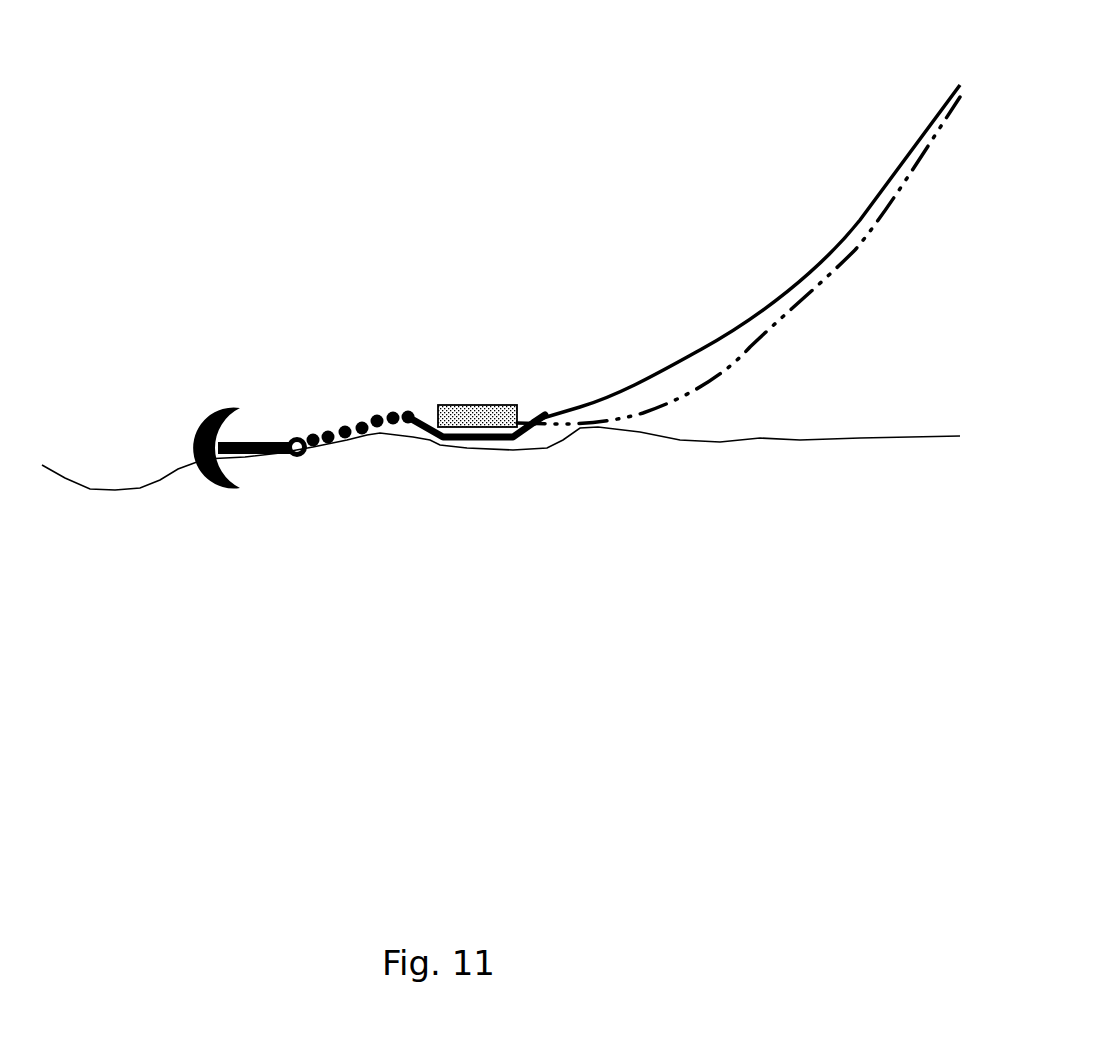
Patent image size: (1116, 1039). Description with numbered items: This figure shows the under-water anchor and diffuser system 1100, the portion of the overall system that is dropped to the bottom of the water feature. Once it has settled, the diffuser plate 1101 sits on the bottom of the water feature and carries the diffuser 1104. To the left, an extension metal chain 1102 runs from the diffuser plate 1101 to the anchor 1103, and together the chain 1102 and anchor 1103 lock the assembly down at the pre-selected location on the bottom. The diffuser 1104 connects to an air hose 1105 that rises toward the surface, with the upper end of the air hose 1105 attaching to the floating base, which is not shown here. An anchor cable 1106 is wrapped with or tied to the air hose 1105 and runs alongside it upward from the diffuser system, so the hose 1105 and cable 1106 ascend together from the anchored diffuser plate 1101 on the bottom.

The under-water anchor and diffuser system 1100 is at (299, 91).
The diffuser plate 1101 is at (490, 450).
The extension metal chain 1102 is at (328, 425).
The anchor 1103 is at (193, 425).
The diffuser 1104 is at (470, 398).
The air hose 1105 is at (717, 330).
The anchor cable 1106 is at (782, 318).